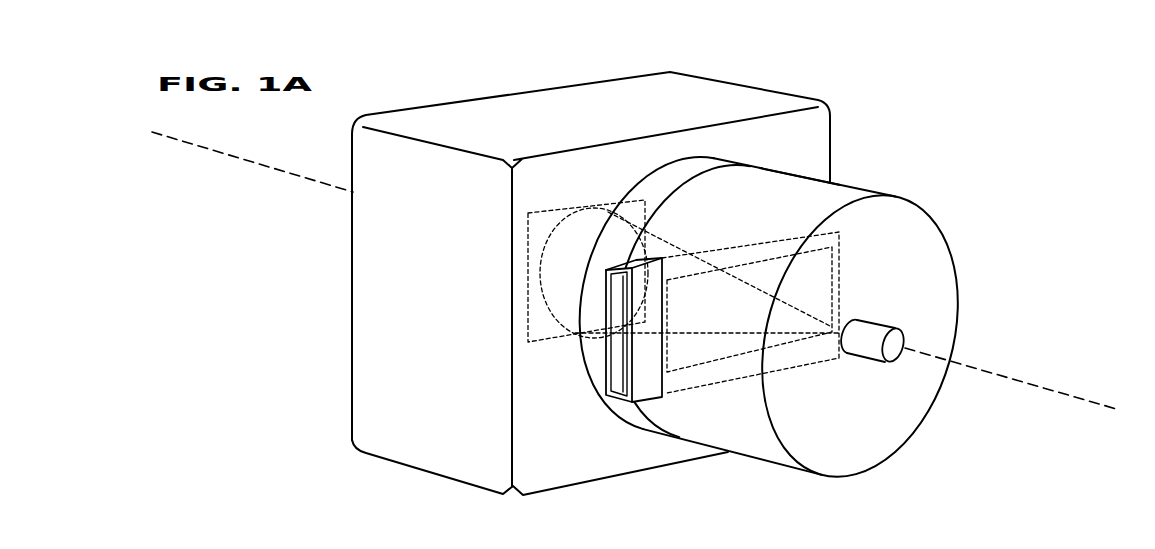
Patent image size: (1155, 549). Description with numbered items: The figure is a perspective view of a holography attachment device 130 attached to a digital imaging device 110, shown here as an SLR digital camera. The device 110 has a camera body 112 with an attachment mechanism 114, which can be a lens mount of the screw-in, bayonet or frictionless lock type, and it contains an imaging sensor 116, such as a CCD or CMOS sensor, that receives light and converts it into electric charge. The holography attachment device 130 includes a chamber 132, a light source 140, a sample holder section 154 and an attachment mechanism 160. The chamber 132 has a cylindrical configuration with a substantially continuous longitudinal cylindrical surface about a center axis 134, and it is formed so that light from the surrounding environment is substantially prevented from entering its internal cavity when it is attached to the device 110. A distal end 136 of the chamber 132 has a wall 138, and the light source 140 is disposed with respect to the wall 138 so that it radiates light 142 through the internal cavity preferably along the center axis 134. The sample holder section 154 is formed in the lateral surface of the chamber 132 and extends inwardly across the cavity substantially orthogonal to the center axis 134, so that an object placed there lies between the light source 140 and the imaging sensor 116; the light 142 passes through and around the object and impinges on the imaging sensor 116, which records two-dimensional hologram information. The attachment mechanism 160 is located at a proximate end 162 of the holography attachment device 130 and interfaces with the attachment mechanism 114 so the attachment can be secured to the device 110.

The digital imaging device 110 is at (591, 273).
The camera body 112 is at (528, 118).
The attachment mechanism 114 is at (733, 156).
The imaging sensor 116 is at (541, 326).
The holography attachment device 130 is at (833, 269).
The chamber 132 is at (801, 170).
The center axis 134 is at (1016, 372).
The distal end 136 is at (1005, 262).
The wall 138 is at (909, 336).
The light source 140 is at (873, 364).
The light 142 is at (799, 302).
The sample holder section 154 is at (596, 411).
The attachment mechanism 160 is at (769, 257).
The proximate end 162 is at (706, 155).